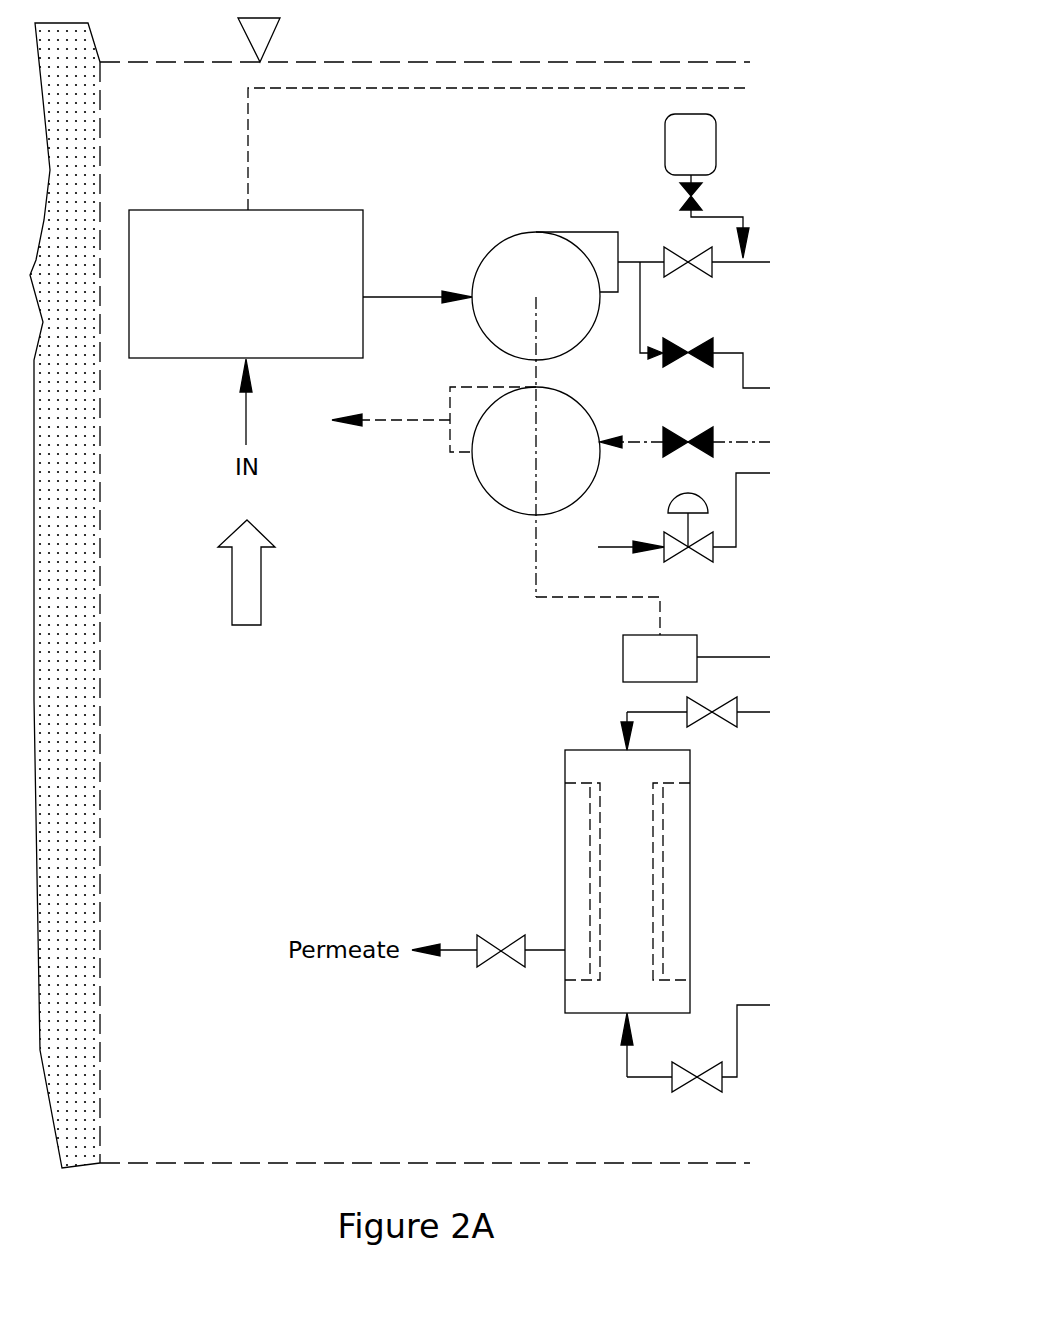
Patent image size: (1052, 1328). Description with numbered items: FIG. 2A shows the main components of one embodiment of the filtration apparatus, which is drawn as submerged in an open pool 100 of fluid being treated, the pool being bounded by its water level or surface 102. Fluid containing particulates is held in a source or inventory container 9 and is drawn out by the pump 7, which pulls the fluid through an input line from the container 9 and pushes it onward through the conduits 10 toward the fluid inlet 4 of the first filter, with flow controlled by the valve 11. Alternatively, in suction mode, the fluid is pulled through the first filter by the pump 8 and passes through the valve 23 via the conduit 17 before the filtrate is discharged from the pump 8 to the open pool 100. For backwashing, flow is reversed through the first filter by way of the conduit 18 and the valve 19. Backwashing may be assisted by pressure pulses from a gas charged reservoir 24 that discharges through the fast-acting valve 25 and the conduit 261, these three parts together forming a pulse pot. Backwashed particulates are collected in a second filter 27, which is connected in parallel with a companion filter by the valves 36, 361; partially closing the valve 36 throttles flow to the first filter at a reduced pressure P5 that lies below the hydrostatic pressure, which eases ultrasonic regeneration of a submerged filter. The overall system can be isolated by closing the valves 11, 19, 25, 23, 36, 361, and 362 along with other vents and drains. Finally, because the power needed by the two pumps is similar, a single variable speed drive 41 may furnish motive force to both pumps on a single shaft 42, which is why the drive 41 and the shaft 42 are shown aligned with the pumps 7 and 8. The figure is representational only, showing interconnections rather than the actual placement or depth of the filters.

The water level/surface 102 is at (288, 33).
The source or inventory container 9 is at (316, 210).
The open pool 100 is at (234, 611).
The pump 7 is at (487, 253).
The pump 8 is at (478, 387).
The conduits 10 is at (634, 258).
The valve 11 is at (673, 247).
The fluid inlet 4 is at (727, 262).
The reservoir 24 is at (665, 135).
The valve 25 is at (700, 200).
The conduit 261 is at (735, 217).
The conduit 18 is at (636, 322).
The valve 19 is at (680, 366).
The valve 23 is at (705, 430).
The conduit 17 is at (650, 444).
The valve 362 is at (676, 558).
The pressure P5 is at (740, 517).
The single shaft 42 is at (536, 578).
The variable speed drive 41 is at (623, 656).
The second filter 27 is at (565, 755).
The valve 361 is at (727, 727).
The valve 36 is at (690, 1092).